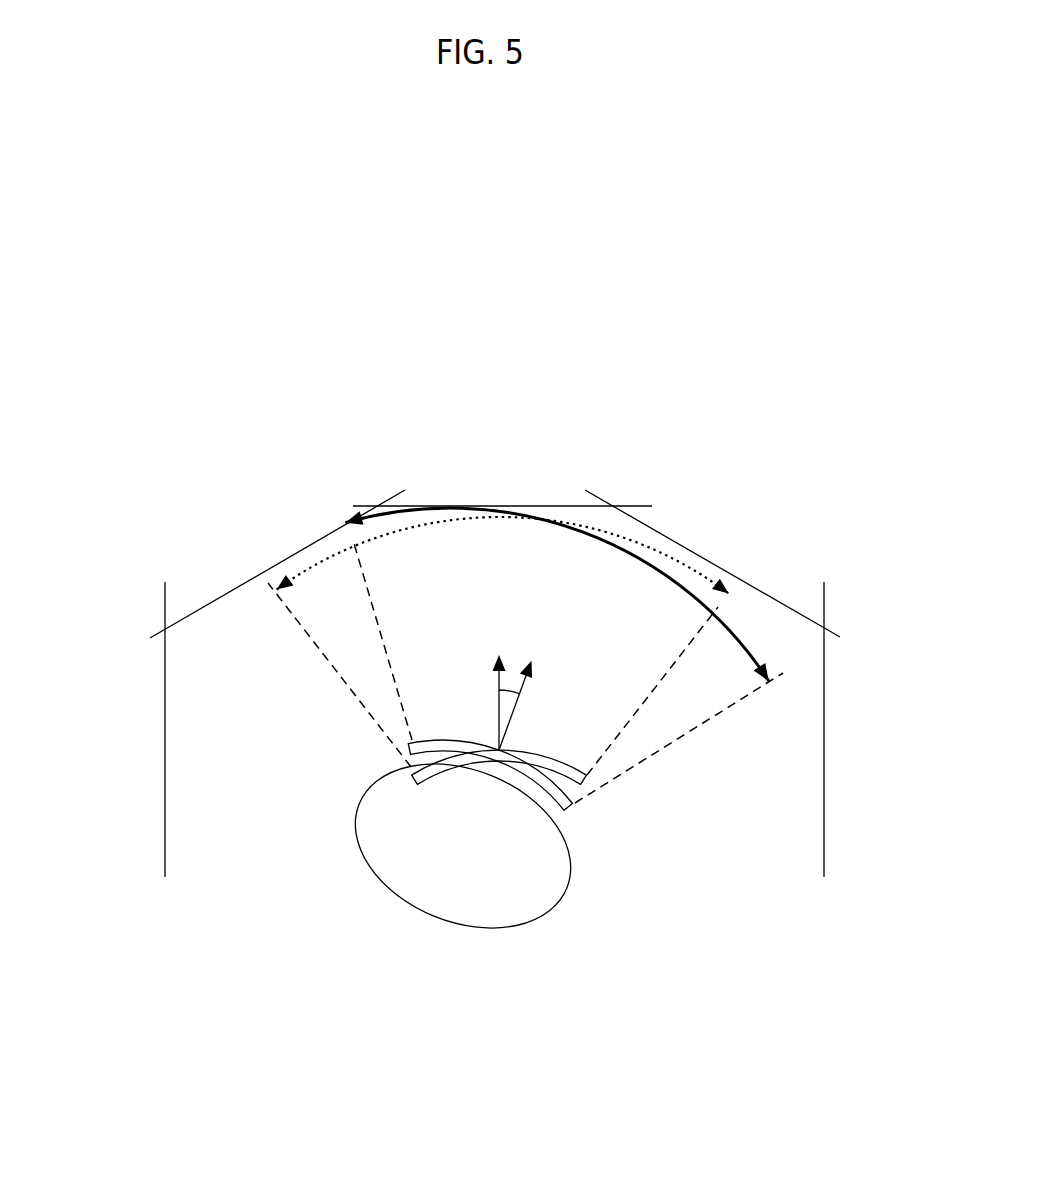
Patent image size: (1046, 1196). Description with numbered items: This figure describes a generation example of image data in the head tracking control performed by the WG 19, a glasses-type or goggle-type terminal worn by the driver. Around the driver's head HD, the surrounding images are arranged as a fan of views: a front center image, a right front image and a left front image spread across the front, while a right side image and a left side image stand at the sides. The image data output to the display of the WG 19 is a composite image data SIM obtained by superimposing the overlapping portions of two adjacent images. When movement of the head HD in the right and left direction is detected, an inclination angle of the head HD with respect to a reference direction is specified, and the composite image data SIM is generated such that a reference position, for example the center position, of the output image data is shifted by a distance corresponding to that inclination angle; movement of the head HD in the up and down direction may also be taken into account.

The WG 19 is at (448, 740).
The head HD is at (538, 910).
The composite image data SIM is at (380, 505).